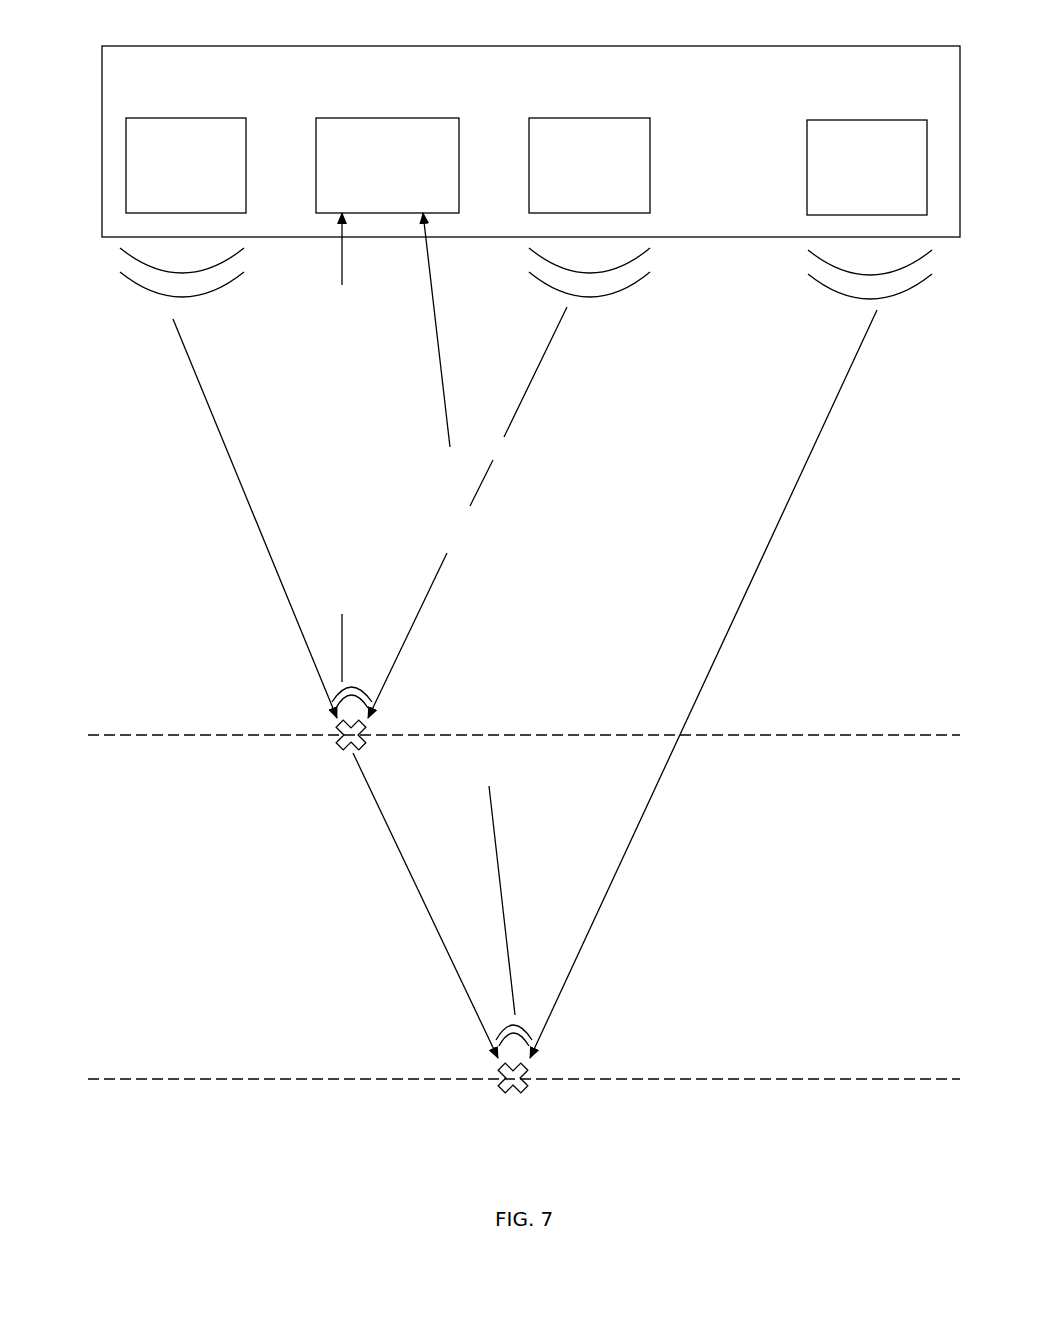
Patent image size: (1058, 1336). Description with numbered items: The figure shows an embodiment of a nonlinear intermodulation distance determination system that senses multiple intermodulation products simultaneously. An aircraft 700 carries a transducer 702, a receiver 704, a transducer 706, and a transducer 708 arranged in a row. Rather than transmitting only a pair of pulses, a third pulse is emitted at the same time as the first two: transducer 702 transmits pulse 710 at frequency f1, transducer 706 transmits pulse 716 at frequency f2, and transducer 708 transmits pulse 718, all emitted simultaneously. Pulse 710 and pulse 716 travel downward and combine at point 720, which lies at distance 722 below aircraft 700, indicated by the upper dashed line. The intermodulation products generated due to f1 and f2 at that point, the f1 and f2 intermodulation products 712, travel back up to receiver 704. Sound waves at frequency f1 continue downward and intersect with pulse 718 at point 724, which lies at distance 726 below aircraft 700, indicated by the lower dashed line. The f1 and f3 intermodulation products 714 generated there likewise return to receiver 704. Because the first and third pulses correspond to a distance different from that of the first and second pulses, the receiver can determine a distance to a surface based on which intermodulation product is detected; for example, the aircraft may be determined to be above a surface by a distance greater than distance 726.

The aircraft 700 is at (102, 70).
The transducer 702 is at (126, 136).
The receiver 704 is at (316, 138).
The transducer 706 is at (529, 136).
The transducer 708 is at (807, 138).
The pulse 710 is at (200, 374).
The f1 and f2 intermodulation products 712 is at (336, 336).
The f1 and f3 intermodulation products 714 is at (431, 336).
The pulse 716 is at (545, 342).
The pulse 718 is at (846, 374).
The point 720 is at (345, 754).
The distance 722 is at (898, 736).
The point 724 is at (498, 1078).
The distance 726 is at (908, 1080).